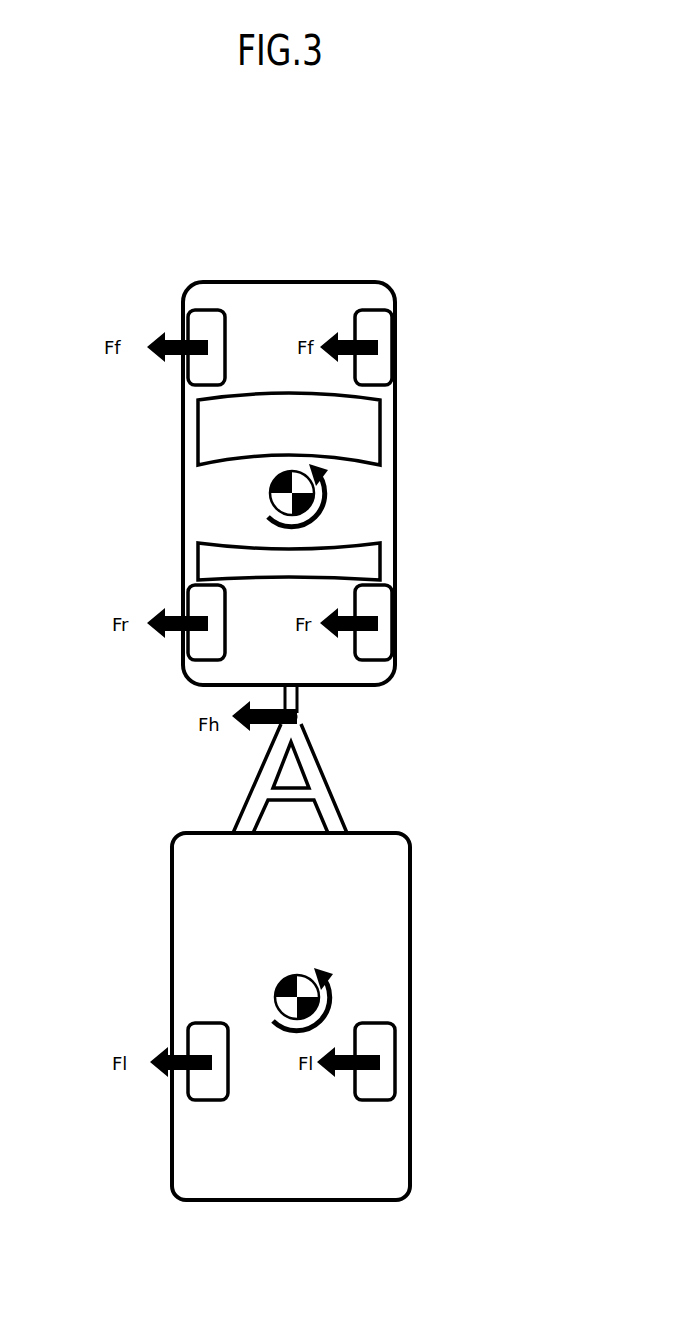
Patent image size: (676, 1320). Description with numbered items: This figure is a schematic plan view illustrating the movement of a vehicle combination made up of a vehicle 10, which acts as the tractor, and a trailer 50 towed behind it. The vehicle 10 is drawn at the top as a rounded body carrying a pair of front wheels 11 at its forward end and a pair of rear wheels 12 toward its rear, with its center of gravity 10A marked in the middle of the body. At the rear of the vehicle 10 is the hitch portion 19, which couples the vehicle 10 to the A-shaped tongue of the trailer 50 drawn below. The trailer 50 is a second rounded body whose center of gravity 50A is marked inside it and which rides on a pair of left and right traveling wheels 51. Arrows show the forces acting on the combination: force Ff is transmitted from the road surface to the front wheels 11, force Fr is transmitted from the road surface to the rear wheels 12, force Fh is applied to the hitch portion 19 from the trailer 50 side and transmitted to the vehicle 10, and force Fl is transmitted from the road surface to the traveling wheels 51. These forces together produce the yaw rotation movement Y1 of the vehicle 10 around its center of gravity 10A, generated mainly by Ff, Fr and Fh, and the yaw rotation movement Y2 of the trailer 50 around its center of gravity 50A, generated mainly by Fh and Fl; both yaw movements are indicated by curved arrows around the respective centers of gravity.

The vehicle 10 is at (320, 281).
The center of gravity of vehicle 10A is at (268, 493).
The front wheels 11 is at (188, 322).
The rear wheels 12 is at (188, 585).
The hitch portion 19 is at (300, 717).
The trailer 50 is at (410, 893).
The center of gravity of trailer 50A is at (275, 988).
The traveling wheels 51 is at (210, 1100).
The yaw rotation movement Y1 is at (330, 505).
The yaw rotation movement Y2 is at (330, 1000).